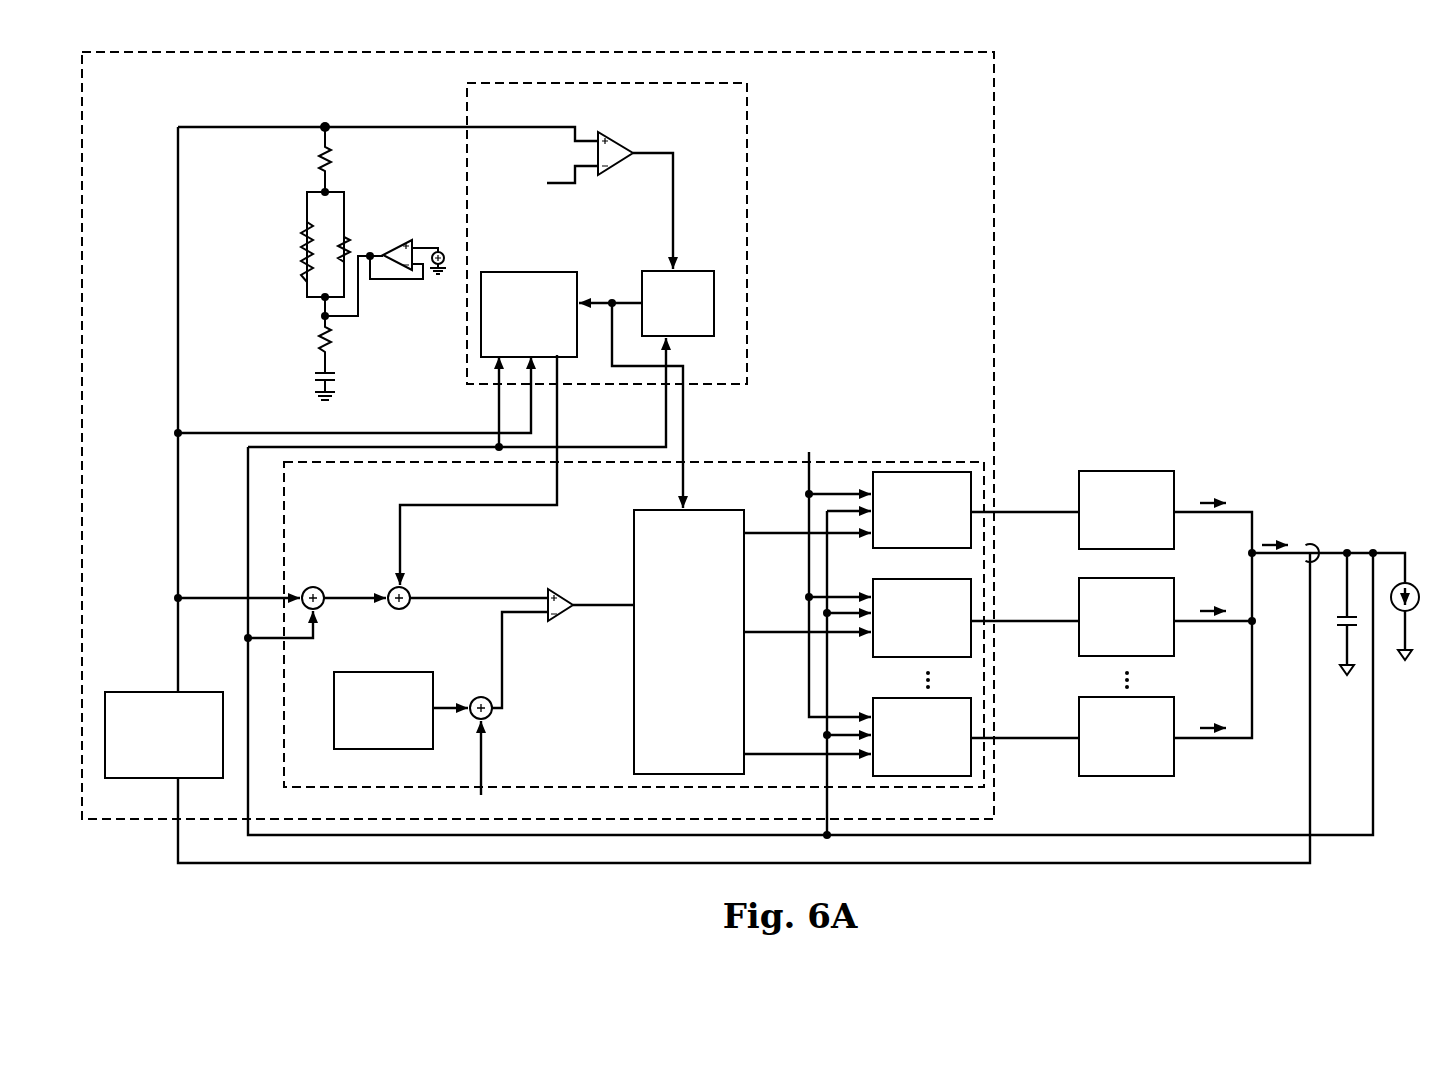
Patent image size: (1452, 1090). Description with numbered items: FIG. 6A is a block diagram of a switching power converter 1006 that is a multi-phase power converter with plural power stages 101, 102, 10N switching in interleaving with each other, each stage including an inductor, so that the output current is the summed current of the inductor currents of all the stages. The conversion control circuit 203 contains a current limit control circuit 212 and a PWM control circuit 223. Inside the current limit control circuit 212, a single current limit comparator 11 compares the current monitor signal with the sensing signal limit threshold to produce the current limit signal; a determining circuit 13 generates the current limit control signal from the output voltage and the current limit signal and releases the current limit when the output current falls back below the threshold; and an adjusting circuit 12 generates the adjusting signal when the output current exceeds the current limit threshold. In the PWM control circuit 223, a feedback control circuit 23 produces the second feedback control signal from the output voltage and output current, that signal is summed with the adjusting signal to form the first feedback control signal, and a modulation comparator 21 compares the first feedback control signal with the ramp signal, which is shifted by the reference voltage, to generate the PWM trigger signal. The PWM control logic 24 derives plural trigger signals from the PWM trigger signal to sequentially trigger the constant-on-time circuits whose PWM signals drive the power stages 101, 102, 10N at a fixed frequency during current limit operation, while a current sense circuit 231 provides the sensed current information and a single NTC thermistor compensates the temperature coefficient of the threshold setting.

The switching power converter 1006 is at (1298, 53).
The conversion control circuit 203 is at (952, 81).
The current limit control circuit 212 is at (472, 106).
The current limit comparator 11 is at (602, 136).
The determining circuit 13 is at (667, 315).
The adjusting circuit 12 is at (519, 349).
The PWM control circuit 223 is at (292, 489).
The feedback control circuit 23 is at (321, 609).
The modulation comparator 21 is at (551, 591).
The PWM control logic 24 is at (679, 700).
The current sense circuit 231 is at (149, 770).
The power stage 101 is at (1111, 545).
The power stage 102 is at (1111, 652).
The power stage 10N is at (1111, 771).